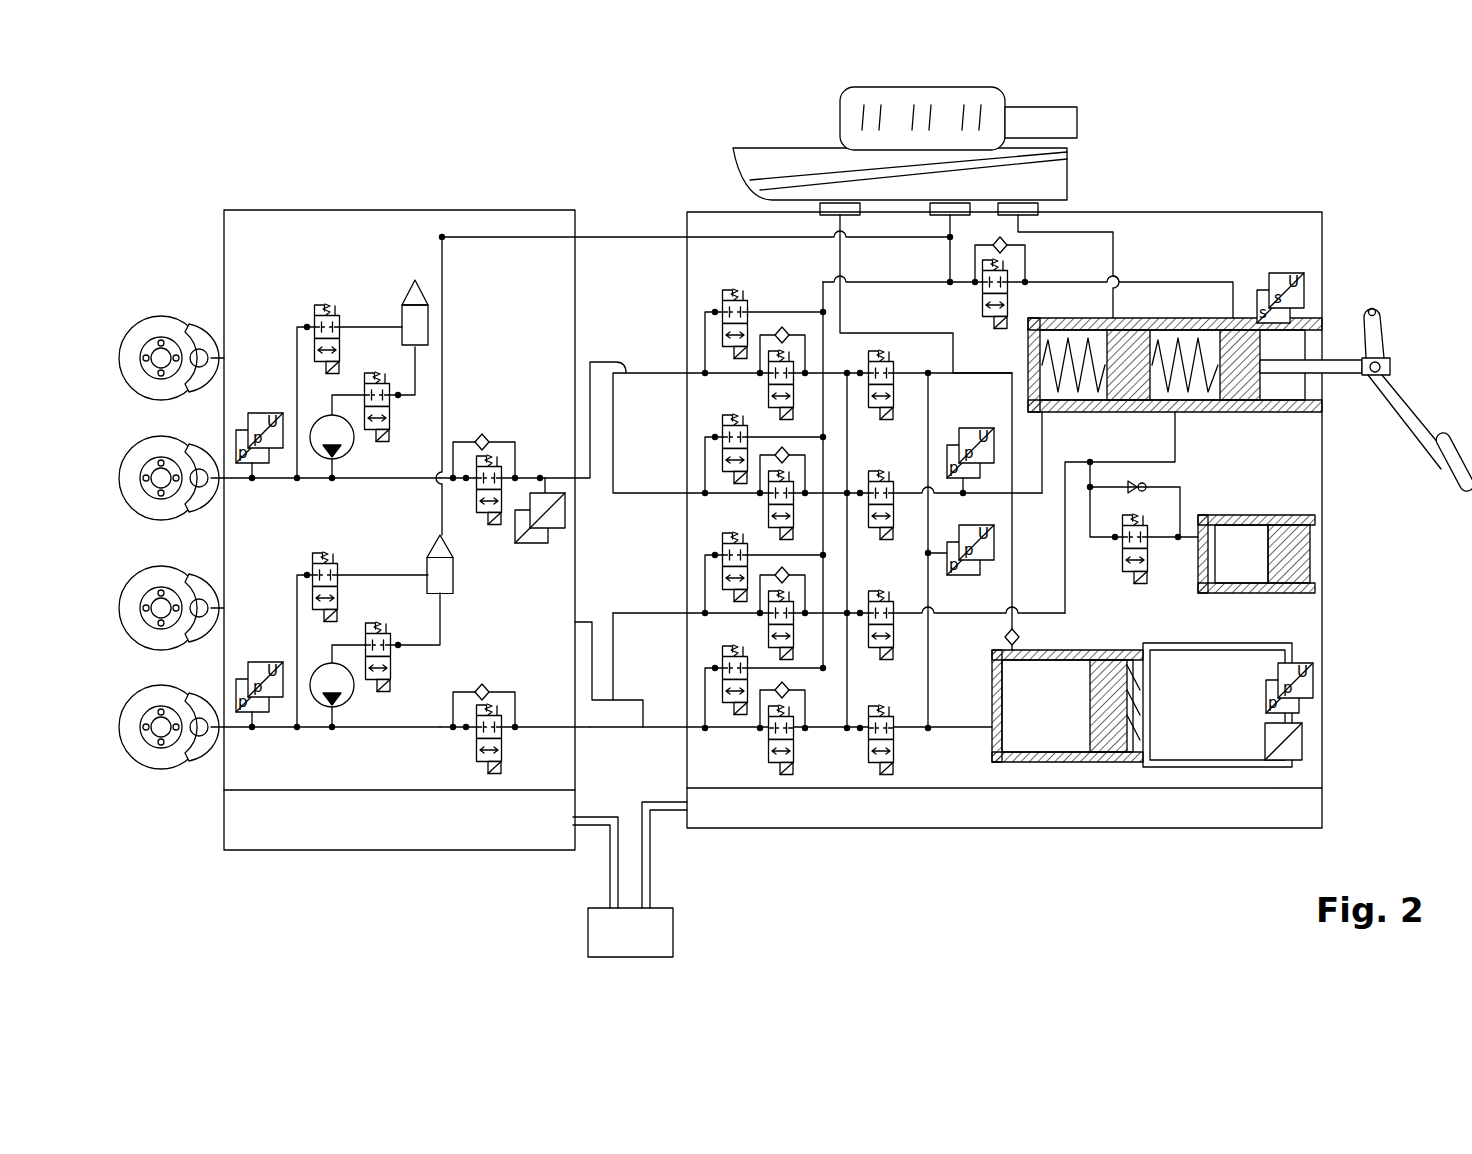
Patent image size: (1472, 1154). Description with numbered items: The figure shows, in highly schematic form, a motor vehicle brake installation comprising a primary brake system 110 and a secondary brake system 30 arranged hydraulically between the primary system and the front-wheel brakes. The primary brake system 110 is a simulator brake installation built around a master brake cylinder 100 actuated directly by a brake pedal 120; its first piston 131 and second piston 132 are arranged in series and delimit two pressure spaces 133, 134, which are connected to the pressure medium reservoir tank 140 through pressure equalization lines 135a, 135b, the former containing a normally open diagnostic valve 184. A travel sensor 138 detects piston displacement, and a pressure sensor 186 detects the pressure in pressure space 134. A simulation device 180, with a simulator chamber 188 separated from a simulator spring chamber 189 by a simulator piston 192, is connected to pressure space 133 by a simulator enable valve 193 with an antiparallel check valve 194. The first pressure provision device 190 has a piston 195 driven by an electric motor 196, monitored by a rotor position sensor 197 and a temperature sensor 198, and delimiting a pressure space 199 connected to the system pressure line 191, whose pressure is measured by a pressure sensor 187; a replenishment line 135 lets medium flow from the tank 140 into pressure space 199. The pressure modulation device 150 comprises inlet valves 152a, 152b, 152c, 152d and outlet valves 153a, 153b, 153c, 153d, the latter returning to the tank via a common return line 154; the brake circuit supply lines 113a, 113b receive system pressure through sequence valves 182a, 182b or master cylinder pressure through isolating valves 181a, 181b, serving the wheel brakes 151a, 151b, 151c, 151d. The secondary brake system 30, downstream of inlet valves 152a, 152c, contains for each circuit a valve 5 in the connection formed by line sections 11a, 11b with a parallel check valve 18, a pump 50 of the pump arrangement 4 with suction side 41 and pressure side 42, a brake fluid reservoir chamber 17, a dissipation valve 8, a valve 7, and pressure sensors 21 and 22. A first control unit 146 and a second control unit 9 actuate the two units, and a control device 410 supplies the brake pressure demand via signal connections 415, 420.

The secondary brake system 30 is at (293, 198).
The primary brake system 110 is at (1232, 190).
The pressure medium reservoir tank 140 is at (1052, 180).
The pressure modulation device 150 is at (760, 288).
The common return line 154 is at (820, 300).
The travel sensor 138 is at (1302, 312).
The brake pedal 120 is at (1407, 405).
The master brake cylinder 100 is at (1302, 422).
The dissipation valve 8 is at (342, 322).
The brake fluid reservoir chamber 17 is at (430, 330).
The pressure sensor 21 is at (258, 412).
The suction side 41 is at (320, 412).
The pump 50 is at (340, 425).
The valve 7 is at (396, 414).
The check valve 18 is at (487, 435).
The line section 11a is at (527, 474).
The line section 11b is at (300, 482).
The pressure side 42 is at (342, 454).
The pump arrangement 4 is at (343, 487).
The valve 5 is at (488, 528).
The pressure sensor 22 is at (548, 546).
The second electronic open-loop and closed-loop control unit 9 is at (405, 825).
The signal connection 415 is at (608, 880).
The signal connection 420 is at (652, 880).
The control device 410 is at (675, 932).
The first electronic open-loop and closed-loop control unit 146 is at (912, 812).
The wheel brake 151a is at (208, 328).
The wheel brake 151b is at (208, 448).
The wheel brake 151c is at (208, 578).
The wheel brake 151d is at (208, 697).
The outlet valve 153a is at (718, 345).
The outlet valve 153b is at (718, 470).
The outlet valve 153c is at (718, 588).
The outlet valve 153d is at (718, 700).
The inlet valve 152a is at (760, 385).
The inlet valve 152b is at (762, 508).
The inlet valve 152c is at (762, 630).
The inlet valve 152d is at (762, 745).
The sequence valve 182b is at (890, 358).
The sequence valve 182a is at (870, 760).
The diagnostic valve 184 is at (1010, 308).
The pressure sensor 186 is at (953, 427).
The pressure sensor 187 is at (963, 578).
The brake circuit supply line 113b is at (848, 415).
The brake circuit supply line 113a is at (850, 648).
The isolating valve 181b is at (870, 535).
The isolating valve 181a is at (896, 722).
The system pressure line 191 is at (968, 730).
The replenishment line 135 is at (1020, 607).
The pressure equalization line 135a is at (1222, 278).
The pressure equalization line 135b is at (1115, 250).
The pressure space 134 is at (1085, 390).
The second piston 132 is at (1145, 406).
The pressure space 133 is at (1198, 390).
The first piston 131 is at (1268, 408).
The check valve 194 is at (1150, 490).
The simulator spring chamber 189 is at (1280, 516).
The simulator enable valve 193 is at (1150, 586).
The simulator chamber 188 is at (1210, 595).
The simulator piston 192 is at (1298, 596).
The simulation device 180 is at (1202, 736).
The first electrically controllable pressure provision device 190 is at (1302, 652).
The rotor position sensor 197 is at (1320, 702).
The temperature sensor 198 is at (1305, 745).
The pressure space 199 is at (1047, 725).
The piston 195 is at (1100, 772).
The electric motor 196 is at (1205, 745).